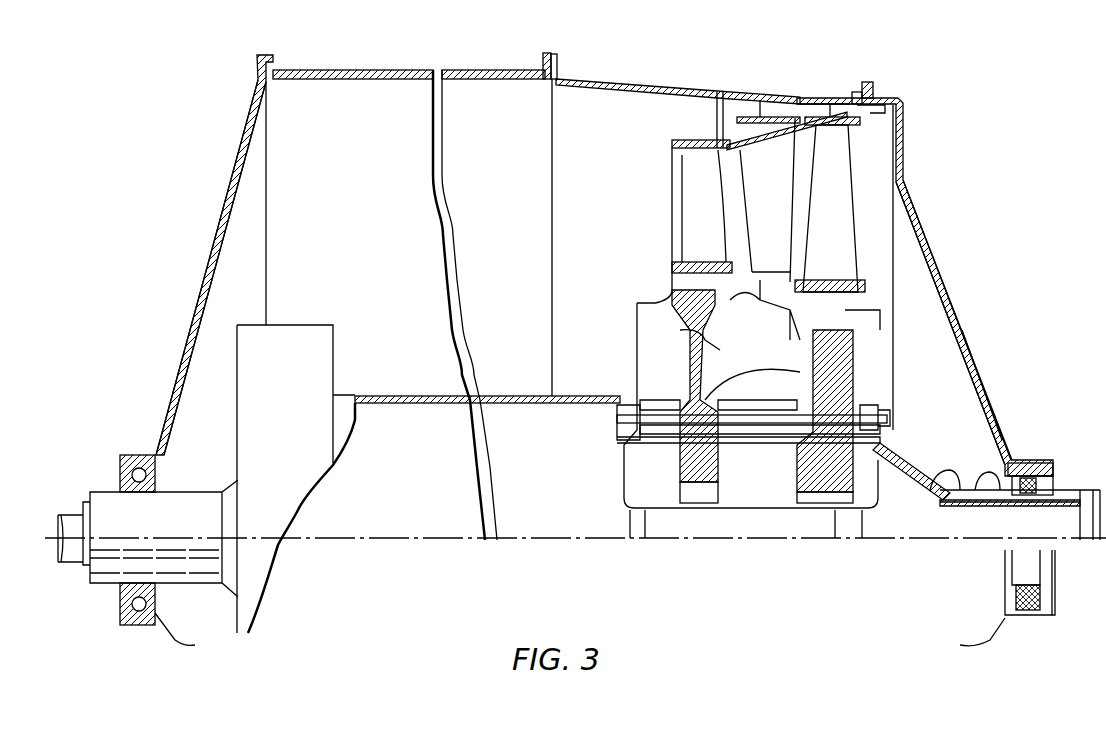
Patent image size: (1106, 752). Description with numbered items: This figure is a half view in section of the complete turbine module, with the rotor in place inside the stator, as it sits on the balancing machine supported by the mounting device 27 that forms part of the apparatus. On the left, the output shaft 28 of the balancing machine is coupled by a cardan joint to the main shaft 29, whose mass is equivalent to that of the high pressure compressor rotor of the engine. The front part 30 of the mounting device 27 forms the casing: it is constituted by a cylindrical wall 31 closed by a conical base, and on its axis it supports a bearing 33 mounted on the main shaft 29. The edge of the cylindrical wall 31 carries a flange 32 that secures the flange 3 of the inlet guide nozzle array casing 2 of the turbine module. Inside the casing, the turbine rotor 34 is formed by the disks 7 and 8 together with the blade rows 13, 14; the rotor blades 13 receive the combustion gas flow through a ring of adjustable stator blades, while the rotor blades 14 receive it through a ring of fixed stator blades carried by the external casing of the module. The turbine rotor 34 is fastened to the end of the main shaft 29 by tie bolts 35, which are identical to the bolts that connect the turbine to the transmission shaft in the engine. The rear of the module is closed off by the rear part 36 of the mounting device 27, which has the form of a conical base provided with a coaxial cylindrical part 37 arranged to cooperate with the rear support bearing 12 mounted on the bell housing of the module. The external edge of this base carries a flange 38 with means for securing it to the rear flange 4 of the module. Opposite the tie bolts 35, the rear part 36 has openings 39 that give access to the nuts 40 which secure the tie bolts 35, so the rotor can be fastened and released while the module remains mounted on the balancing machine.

The inlet guide nozzle array casing 2 is at (685, 91).
The flange 3 is at (558, 65).
The rear flange 4 is at (858, 93).
The disk 7 is at (718, 465).
The disk 8 is at (797, 480).
The rear support bearing 12 is at (1050, 482).
The rotor blades 13 is at (713, 219).
The rotor blades 14 is at (845, 219).
The mounting device 27 is at (255, 30).
The output shaft 28 is at (75, 515).
The main shaft 29 is at (398, 391).
The front part 30 is at (195, 300).
The cylindrical wall 31 is at (323, 75).
The flange 32 is at (542, 62).
The bearing 33 is at (157, 487).
The turbine rotor 34 is at (680, 383).
The tie bolts 35 is at (750, 415).
The rear part 36 is at (978, 361).
The cylindrical part 37 is at (1058, 458).
The flange 38 is at (874, 88).
The openings 39 is at (997, 415).
The nuts 40 is at (880, 408).